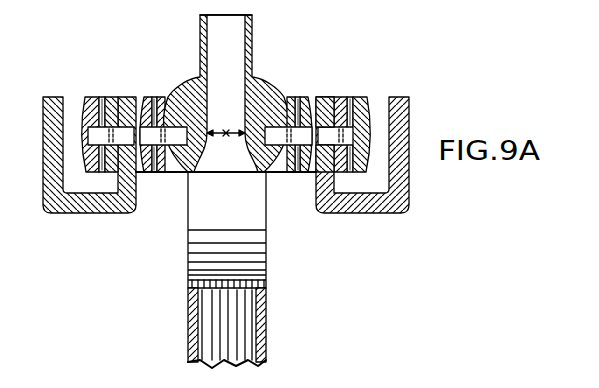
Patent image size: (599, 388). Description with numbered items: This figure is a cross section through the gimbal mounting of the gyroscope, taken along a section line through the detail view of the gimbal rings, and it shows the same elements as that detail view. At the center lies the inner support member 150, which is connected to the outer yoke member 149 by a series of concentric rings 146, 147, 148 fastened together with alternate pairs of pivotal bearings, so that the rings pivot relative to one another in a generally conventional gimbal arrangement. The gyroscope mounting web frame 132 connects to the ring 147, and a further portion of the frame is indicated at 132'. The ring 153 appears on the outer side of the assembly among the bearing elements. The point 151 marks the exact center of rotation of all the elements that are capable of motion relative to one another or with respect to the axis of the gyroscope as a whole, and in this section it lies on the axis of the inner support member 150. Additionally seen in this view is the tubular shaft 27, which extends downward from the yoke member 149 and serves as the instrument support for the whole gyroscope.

The tubular shaft 27 is at (267, 312).
The gyroscope mounting web frame 132 is at (378, 155).
The bearing housing 132' is at (370, 175).
The concentric ring 146 is at (360, 98).
The concentric ring 147 is at (328, 97).
The concentric ring 148 is at (296, 97).
The outer yoke member 149 is at (266, 214).
The inner support member 150 is at (200, 33).
The center of rotation 151 is at (236, 136).
The outer bearing ring 153 is at (107, 70).